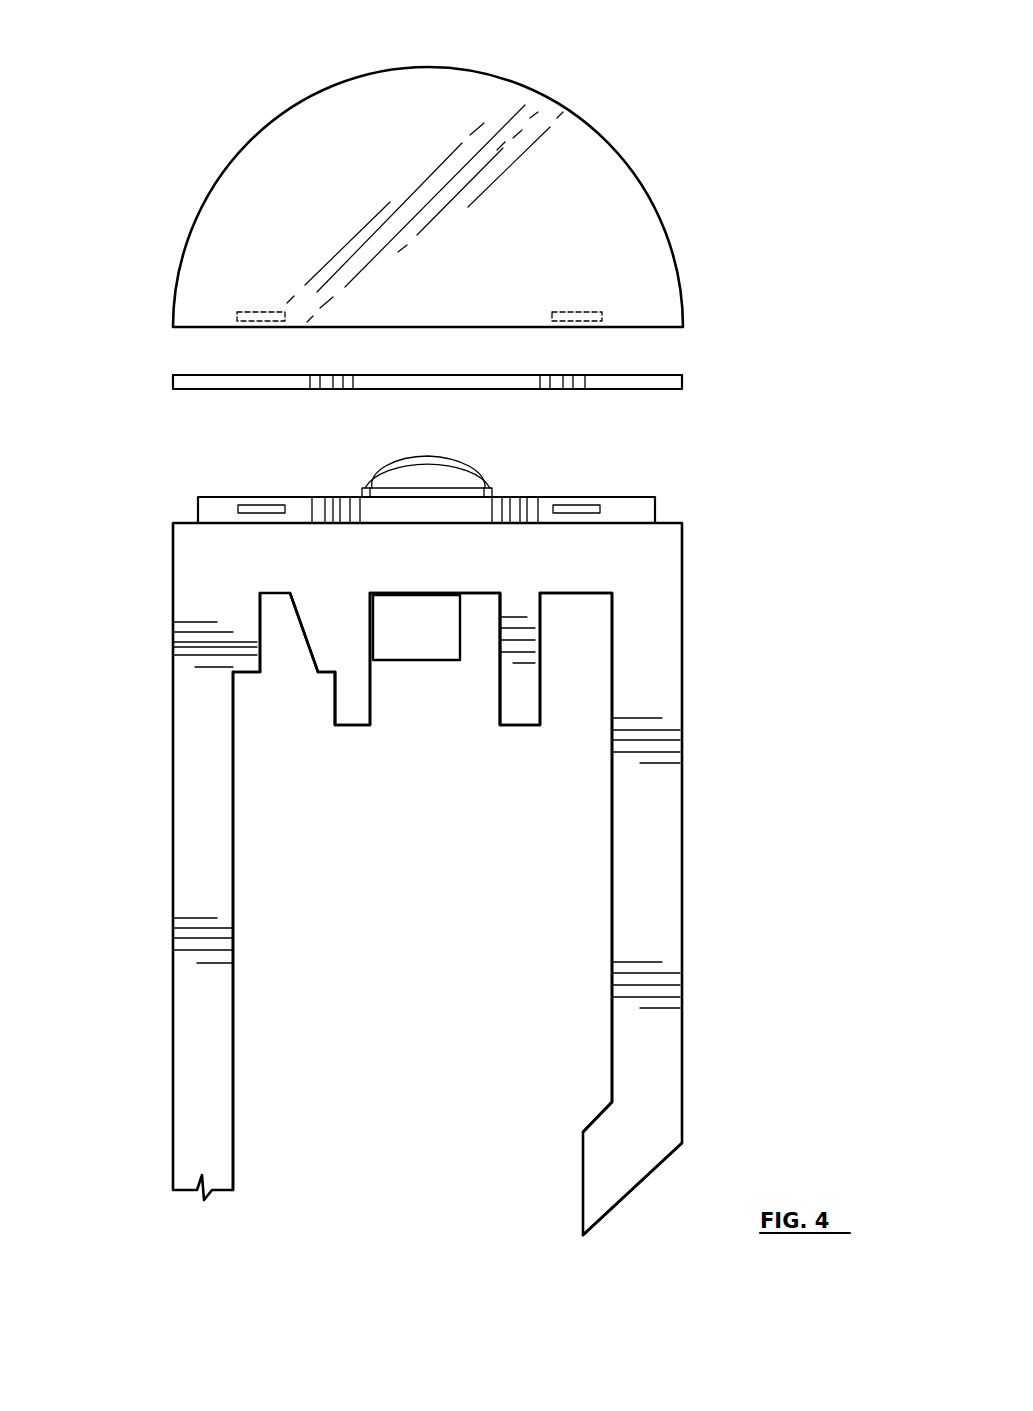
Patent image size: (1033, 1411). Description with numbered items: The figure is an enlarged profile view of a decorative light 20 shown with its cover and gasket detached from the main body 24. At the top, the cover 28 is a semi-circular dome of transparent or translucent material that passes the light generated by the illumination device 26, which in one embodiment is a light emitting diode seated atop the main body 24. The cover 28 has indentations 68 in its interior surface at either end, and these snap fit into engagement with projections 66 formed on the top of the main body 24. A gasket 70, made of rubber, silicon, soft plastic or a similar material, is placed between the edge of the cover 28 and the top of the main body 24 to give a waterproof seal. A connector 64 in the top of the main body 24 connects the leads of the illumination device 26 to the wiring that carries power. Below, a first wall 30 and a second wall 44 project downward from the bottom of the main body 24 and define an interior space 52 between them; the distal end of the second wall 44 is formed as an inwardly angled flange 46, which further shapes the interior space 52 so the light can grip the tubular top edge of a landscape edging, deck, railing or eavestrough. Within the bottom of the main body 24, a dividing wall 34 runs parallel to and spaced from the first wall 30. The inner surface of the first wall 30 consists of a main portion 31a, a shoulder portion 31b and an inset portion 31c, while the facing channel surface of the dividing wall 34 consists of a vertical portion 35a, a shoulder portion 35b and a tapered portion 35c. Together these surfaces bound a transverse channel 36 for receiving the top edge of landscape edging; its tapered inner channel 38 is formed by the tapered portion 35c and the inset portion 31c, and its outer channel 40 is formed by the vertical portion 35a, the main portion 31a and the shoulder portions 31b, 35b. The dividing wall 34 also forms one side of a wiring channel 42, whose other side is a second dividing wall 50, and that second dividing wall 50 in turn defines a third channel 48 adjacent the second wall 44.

The decorative light 20 is at (722, 110).
The main body 24 is at (132, 605).
The illumination device 26 is at (428, 457).
The cover 28 is at (543, 97).
The first wall 30 is at (186, 1023).
The main portion 31a is at (237, 886).
The shoulder portion 31b is at (247, 676).
The inset portion 31c is at (278, 628).
The dividing wall 34 is at (353, 665).
The vertical portion 35a is at (333, 714).
The shoulder portion 35b is at (321, 678).
The tapered portion 35c is at (293, 612).
The transverse channel 36 is at (275, 754).
The tapered inner channel 38 is at (297, 665).
The outer channel 40 is at (297, 722).
The wiring channel 42 is at (455, 702).
The second wall 44 is at (658, 850).
The inwardly angled flange 46 is at (640, 1148).
The third channel 48 is at (589, 662).
The second dividing wall 50 is at (518, 713).
The interior space 52 is at (453, 993).
The connector 64 is at (428, 640).
The projections 66 is at (262, 505).
The indentations 68 is at (253, 312).
The gasket 70 is at (658, 383).